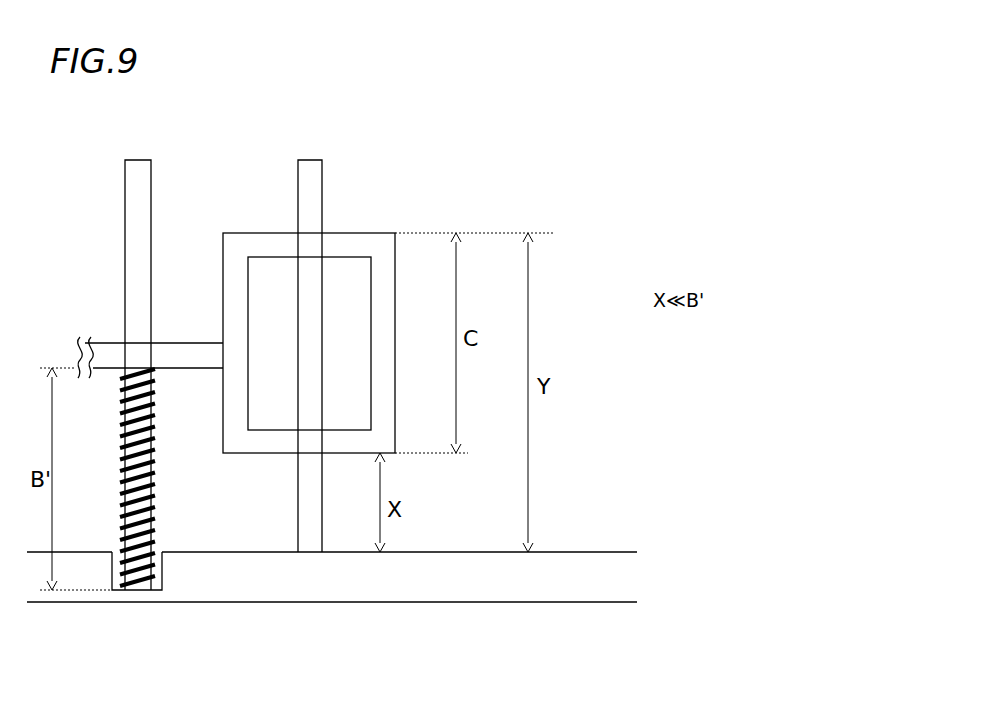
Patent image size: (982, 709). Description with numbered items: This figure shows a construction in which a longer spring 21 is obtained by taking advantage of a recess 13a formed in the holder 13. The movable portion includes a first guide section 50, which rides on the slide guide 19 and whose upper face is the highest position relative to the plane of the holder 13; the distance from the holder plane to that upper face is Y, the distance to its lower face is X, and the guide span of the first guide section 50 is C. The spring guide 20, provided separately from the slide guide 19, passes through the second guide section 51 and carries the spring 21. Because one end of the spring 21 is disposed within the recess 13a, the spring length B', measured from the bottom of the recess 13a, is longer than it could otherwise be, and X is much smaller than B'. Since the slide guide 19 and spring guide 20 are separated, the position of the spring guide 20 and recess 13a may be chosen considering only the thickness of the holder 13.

The holder 13 is at (623, 578).
The recess 13a is at (117, 586).
The slide guide 19 is at (310, 160).
The spring guide 20 is at (140, 158).
The spring 21 is at (153, 490).
The first guide section 50 is at (262, 247).
The second guide section 51 is at (113, 342).